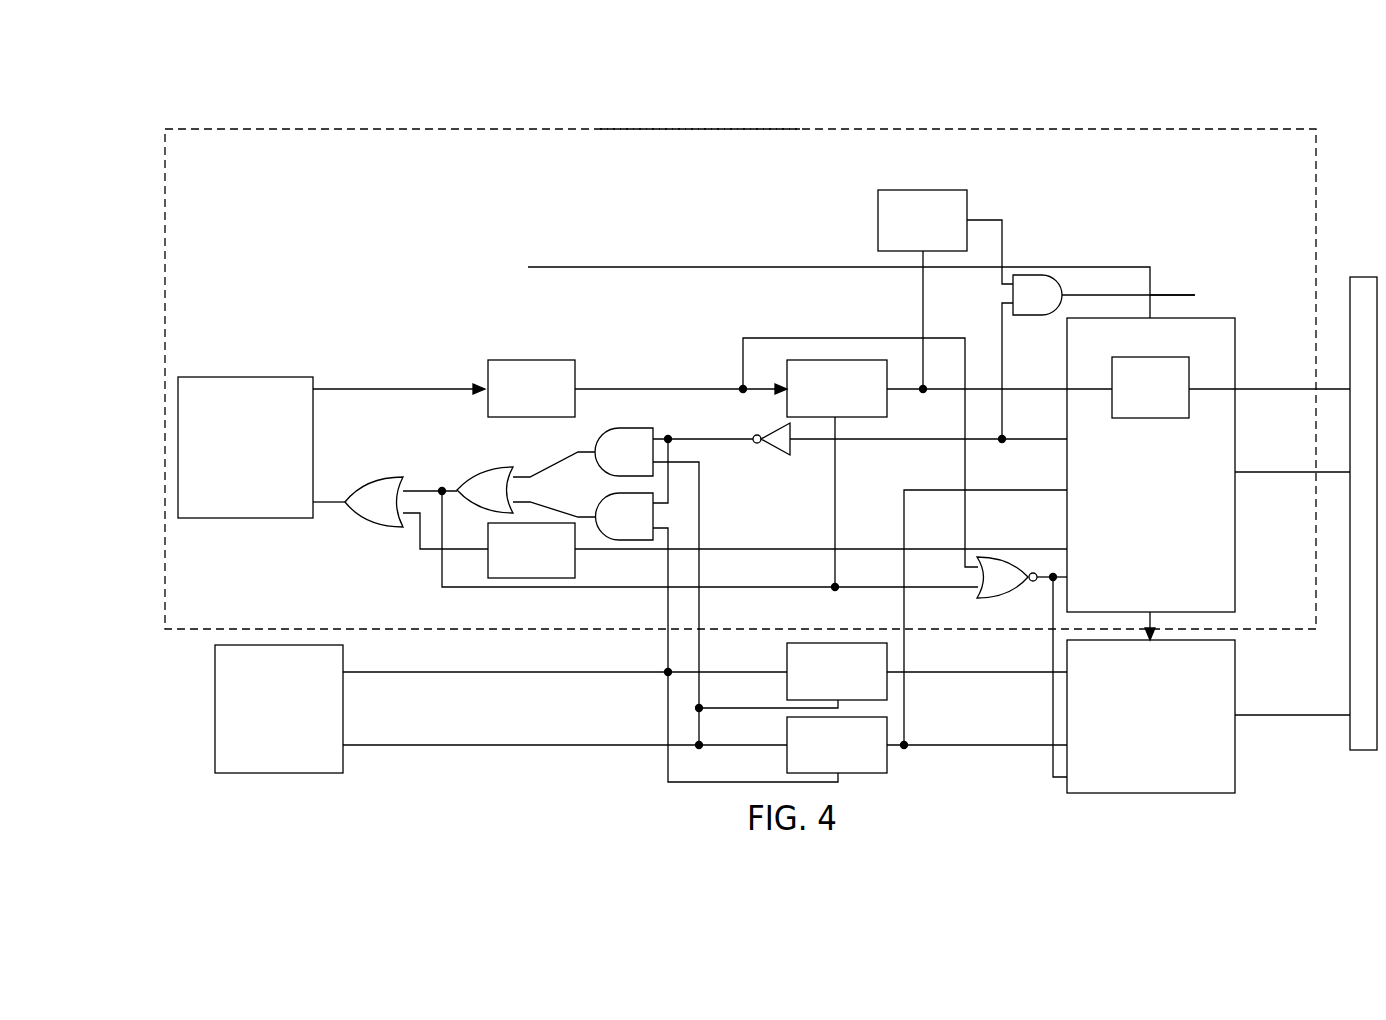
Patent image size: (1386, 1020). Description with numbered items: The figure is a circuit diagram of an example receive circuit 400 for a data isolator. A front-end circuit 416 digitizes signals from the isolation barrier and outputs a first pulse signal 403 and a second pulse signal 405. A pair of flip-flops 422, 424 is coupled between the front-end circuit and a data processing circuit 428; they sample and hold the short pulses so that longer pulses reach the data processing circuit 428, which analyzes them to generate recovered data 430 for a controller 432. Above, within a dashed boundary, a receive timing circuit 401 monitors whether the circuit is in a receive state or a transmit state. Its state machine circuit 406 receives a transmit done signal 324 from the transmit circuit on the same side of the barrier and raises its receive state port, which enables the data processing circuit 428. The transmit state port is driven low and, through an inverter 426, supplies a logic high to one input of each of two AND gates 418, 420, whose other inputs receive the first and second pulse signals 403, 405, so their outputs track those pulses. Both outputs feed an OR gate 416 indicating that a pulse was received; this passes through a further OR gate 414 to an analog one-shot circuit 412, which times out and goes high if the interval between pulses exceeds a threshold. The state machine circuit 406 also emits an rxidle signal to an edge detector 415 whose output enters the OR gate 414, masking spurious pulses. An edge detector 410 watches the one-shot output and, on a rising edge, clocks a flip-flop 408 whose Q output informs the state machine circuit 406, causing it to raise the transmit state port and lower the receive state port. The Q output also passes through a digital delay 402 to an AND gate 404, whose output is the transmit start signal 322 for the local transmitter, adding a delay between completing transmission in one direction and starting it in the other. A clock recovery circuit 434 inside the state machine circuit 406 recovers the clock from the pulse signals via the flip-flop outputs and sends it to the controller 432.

The receive circuit 400 is at (1129, 118).
The receive timing circuit 401 is at (697, 128).
The digital delay 402 is at (920, 190).
The first pulse signal 403 is at (585, 671).
The AND gate 404 is at (1097, 359).
The second pulse signal 405 is at (598, 744).
The state machine circuit 406 is at (1234, 610).
The flip-flop 408 is at (1068, 475).
The edge detector 410 is at (531, 360).
The analog one-shot circuit 412 is at (331, 447).
The OR gate 414 is at (661, 532).
The edge detector 415 is at (575, 578).
The front-end circuit / OR gate 416 is at (405, 612).
The AND gate 418 is at (716, 588).
The AND gate 420 is at (717, 610).
The flip-flop 422 is at (837, 671).
The flip-flop 424 is at (837, 745).
The inverter 426 is at (779, 449).
The data processing circuit 428 is at (1151, 716).
The recovered data 430 is at (1260, 714).
The controller 432 is at (1362, 751).
The clock recovery circuit 434 is at (1187, 373).
The transmit start signal 322 is at (1214, 283).
The transmit done signal 324 is at (763, 286).